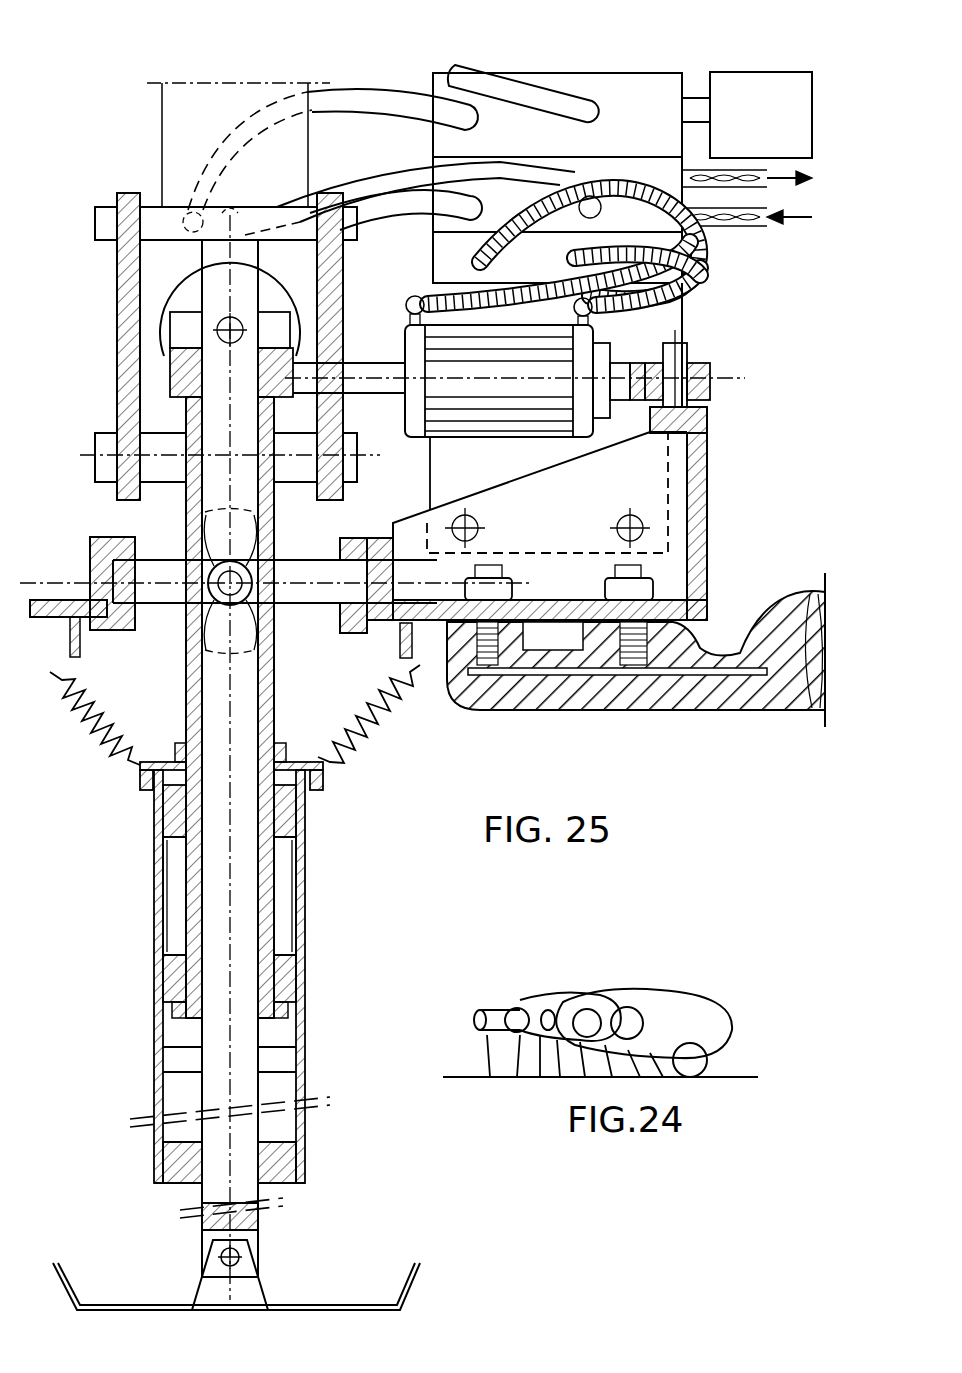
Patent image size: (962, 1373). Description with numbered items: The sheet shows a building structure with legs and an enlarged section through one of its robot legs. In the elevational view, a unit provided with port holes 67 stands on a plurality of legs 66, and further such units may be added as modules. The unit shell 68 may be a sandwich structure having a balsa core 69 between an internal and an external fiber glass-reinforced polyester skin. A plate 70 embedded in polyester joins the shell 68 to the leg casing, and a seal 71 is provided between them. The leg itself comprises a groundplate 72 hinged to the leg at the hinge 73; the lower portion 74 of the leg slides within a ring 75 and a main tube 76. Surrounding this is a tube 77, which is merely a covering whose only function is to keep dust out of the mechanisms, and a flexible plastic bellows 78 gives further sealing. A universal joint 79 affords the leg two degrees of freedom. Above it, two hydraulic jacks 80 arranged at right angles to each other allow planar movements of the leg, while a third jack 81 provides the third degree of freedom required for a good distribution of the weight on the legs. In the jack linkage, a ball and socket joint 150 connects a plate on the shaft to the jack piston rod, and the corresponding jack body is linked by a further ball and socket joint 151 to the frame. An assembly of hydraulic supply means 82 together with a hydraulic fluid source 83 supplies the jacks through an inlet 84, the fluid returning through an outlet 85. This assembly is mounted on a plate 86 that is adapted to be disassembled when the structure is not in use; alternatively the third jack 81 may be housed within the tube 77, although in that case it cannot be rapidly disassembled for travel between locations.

In FIG. 24, the legs 66 is at (712, 1058).
In FIG. 24, the port holes 67 is at (630, 1020).
In FIG. 25, the unit shell 68 is at (700, 703).
In FIG. 25, the balsa core 69 is at (797, 710).
In FIG. 25, the plate 70 is at (655, 675).
In FIG. 25, the seal 71 is at (552, 633).
In FIG. 25, the groundplate 72 is at (243, 1297).
In FIG. 25, the hinge 73 is at (240, 1257).
In FIG. 25, the lower portion of the leg 74 is at (250, 1193).
In FIG. 25, the ring 75 is at (300, 1157).
In FIG. 25, the main tube 76 is at (303, 866).
In FIG. 25, the tube 77 is at (305, 897).
In FIG. 25, the flexible plastic bellows 78 is at (330, 762).
In FIG. 25, the universal joint 79 is at (200, 595).
In FIG. 25, the hydraulic jacks 80 is at (182, 295).
In FIG. 25, the third jack 81 is at (185, 147).
In FIG. 25, the hydraulic supply means 82 is at (557, 178).
In FIG. 25, the hydraulic fluid source 83 is at (747, 115).
In FIG. 25, the inlet 84 is at (762, 217).
In FIG. 25, the outlet 85 is at (762, 178).
In FIG. 25, the plate 86 is at (518, 453).
In FIG. 25, the ball and socket joint 150 is at (170, 380).
In FIG. 25, the ball and socket joint 151 is at (712, 378).